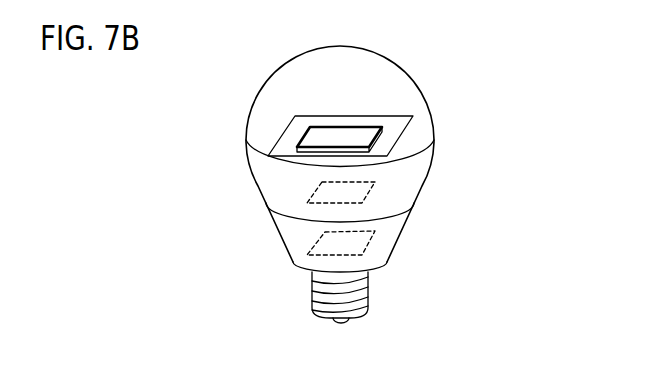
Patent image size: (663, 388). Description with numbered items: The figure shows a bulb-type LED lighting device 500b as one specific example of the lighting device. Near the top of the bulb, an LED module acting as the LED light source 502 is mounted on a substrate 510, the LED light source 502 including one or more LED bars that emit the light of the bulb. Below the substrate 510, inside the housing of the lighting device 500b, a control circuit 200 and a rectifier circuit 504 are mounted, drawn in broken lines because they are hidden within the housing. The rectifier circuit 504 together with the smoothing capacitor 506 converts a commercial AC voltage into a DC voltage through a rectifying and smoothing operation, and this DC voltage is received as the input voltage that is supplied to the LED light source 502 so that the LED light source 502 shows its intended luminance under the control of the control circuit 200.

The lighting device 500b is at (368, 369).
The LED light source 502 is at (353, 132).
The substrate 510 is at (392, 130).
The control circuit 200 is at (350, 191).
The rectifier circuit 504 is at (419, 244).
The smoothing capacitor 506 is at (350, 242).